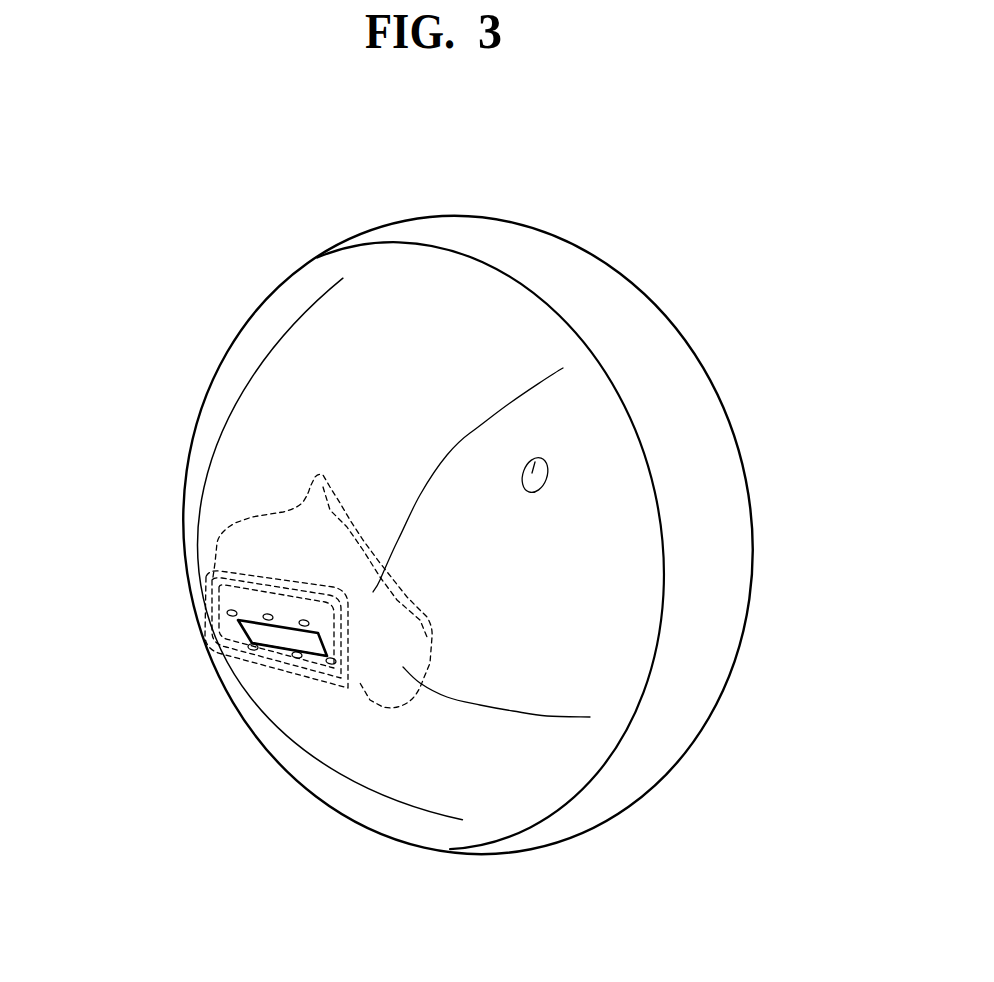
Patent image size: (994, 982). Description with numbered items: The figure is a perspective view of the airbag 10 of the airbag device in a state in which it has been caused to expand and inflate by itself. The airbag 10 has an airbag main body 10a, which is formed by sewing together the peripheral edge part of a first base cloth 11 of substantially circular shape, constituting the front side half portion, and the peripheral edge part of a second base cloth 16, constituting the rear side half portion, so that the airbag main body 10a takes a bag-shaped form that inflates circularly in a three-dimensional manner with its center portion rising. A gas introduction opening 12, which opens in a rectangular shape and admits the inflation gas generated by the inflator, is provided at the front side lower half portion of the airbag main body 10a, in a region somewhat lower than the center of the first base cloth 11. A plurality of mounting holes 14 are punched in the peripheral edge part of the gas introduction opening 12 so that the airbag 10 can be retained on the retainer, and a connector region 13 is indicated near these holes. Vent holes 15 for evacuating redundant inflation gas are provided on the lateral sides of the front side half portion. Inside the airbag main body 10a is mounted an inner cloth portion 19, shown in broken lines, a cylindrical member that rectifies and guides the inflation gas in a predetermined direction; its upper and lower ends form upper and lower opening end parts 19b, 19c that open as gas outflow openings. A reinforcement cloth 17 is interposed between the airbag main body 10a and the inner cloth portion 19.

The airbag 10 is at (236, 276).
The airbag main body 10a is at (288, 355).
The first base cloth 11 is at (396, 296).
The gas introduction opening 12 is at (283, 640).
The connector base 13 is at (312, 663).
The mounting holes 14 is at (232, 612).
The vent holes 15 is at (535, 460).
The second base cloth 16 is at (553, 260).
The reinforcement cloth 17 is at (362, 698).
The inner cloth portion 19 is at (357, 490).
The upper opening end part 19b is at (250, 514).
The lower opening end part 19c is at (432, 672).